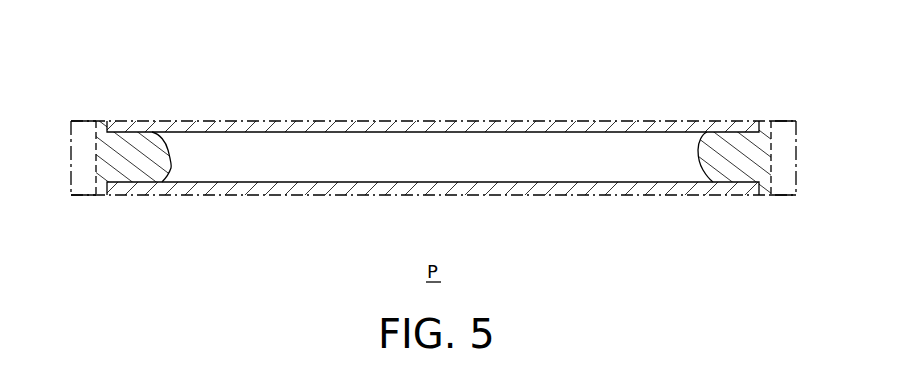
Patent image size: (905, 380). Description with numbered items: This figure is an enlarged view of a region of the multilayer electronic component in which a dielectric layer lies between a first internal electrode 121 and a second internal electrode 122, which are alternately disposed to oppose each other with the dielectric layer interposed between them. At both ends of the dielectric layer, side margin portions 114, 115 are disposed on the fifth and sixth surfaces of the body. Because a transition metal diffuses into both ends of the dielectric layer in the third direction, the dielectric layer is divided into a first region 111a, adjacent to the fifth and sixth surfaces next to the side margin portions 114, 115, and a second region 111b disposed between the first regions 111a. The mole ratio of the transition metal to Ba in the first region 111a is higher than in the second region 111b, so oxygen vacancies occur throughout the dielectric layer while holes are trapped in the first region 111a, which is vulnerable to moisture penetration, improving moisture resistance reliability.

The side margin portion 114 is at (83, 127).
The side margin portion 115 is at (786, 127).
The first region 111a is at (132, 140).
The second region 111b is at (403, 150).
The first internal electrode 121 is at (313, 186).
The second internal electrode 122 is at (315, 127).